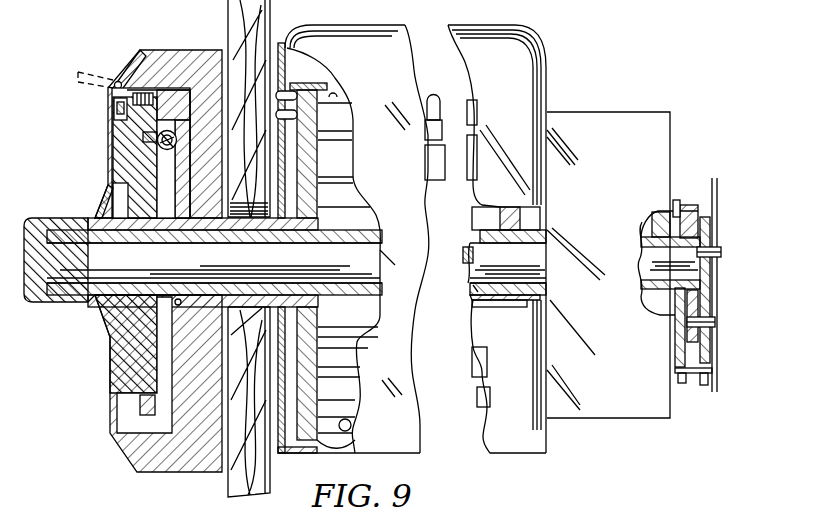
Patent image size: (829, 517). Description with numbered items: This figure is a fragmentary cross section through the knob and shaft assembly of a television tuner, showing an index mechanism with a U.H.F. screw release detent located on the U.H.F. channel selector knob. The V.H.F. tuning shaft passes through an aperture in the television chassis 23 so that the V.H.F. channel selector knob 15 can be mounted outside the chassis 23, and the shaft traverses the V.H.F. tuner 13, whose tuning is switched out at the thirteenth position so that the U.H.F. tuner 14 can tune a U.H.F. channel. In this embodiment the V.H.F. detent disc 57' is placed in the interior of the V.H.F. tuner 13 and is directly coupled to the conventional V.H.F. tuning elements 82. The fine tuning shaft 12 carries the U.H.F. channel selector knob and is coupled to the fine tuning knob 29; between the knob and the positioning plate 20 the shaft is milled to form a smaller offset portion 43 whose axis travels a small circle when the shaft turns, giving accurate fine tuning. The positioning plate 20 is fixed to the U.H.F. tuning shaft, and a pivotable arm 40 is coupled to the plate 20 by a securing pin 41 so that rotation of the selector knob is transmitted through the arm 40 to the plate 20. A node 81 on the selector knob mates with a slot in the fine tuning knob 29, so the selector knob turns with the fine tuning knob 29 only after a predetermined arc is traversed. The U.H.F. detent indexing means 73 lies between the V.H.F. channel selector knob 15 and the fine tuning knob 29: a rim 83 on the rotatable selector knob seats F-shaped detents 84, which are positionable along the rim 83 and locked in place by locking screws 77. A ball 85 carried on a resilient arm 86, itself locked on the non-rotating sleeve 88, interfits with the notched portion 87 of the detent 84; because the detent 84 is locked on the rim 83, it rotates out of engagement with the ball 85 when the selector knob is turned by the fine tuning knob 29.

The fine tuning shaft 12 is at (480, 255).
The V.H.F. tuner 13 is at (403, 43).
The U.H.F. tuner 14 is at (603, 132).
The V.H.F. channel selector knob 15 is at (185, 58).
The positioning plate 20 is at (690, 208).
The television chassis 23 is at (233, 52).
The fine tuning knob 29 is at (43, 300).
The pivotable arm 40 is at (705, 290).
The securing pin 41 is at (713, 320).
The milled portion of fine tuning shaft 43 is at (720, 248).
The V.H.F. detent disc 57' is at (327, 248).
The U.H.F. detent indexing means 73 is at (104, 90).
The locking screw 77 is at (118, 113).
The node 81 is at (110, 217).
The V.H.F. tuning elements 82 is at (440, 112).
The rim 83 is at (147, 107).
The F-shaped detent 84 is at (150, 104).
The ball 85 is at (168, 131).
The resilient arm 86 is at (182, 182).
The notched portion 87 is at (148, 136).
The non-rotating sleeve 88 is at (473, 292).